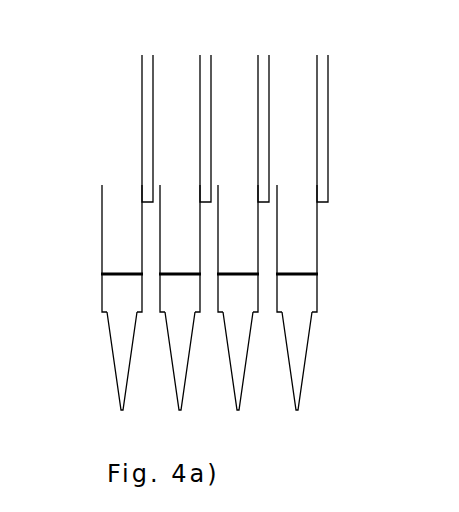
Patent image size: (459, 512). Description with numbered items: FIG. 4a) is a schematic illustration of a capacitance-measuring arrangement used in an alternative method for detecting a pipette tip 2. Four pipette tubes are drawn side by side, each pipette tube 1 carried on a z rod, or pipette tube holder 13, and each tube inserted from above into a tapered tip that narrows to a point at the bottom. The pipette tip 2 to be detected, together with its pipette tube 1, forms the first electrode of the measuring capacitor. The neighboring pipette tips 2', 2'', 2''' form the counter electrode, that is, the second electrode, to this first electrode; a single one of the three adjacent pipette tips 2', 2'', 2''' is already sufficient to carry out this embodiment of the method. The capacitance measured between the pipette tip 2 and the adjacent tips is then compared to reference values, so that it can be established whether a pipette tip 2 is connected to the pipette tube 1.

The pipette tube 1 is at (115, 198).
The pipette tip 2 is at (167, 380).
The adjacent pipette tip 2' is at (79, 359).
The adjacent pipette tip 2'' is at (254, 377).
The adjacent pipette tip 2''' is at (351, 358).
The pipette tube holder 13 is at (333, 157).